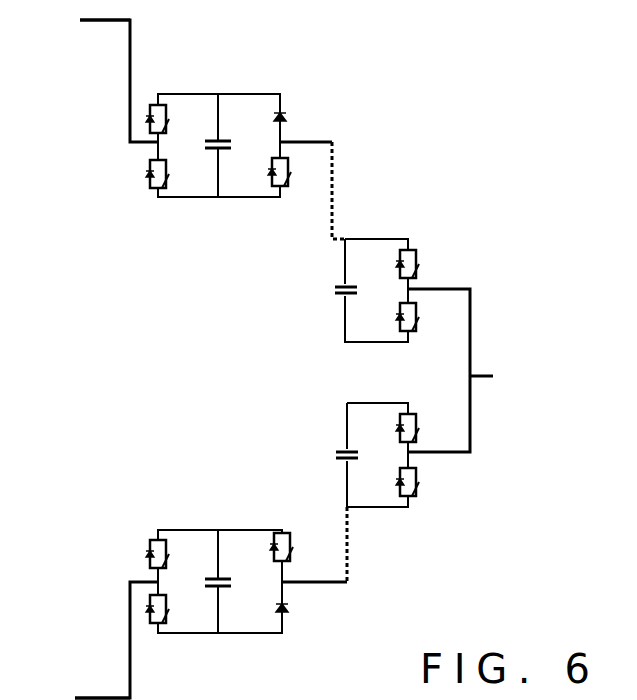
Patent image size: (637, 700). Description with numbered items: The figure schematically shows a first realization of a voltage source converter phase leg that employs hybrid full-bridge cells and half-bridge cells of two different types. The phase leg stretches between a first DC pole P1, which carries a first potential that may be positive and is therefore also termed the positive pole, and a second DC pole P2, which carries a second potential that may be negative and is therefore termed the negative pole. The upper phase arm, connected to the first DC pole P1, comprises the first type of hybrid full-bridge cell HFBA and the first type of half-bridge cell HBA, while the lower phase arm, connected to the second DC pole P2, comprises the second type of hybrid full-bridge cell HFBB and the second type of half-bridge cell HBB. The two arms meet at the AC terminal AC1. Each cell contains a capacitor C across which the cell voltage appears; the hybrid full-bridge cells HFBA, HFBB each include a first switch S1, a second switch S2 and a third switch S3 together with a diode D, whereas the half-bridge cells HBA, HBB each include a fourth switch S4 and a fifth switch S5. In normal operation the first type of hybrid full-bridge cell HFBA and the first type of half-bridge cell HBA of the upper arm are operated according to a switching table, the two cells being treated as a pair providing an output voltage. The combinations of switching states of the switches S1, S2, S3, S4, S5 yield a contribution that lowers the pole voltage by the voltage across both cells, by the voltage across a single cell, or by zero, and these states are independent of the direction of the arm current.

The first DC pole P1 is at (105, 40).
The second DC pole P2 is at (102, 678).
The hybrid full-bridge cell of the first type HFBA is at (219, 119).
The hybrid full-bridge cell of the second type HFBB is at (220, 555).
The half-bridge cell of the first type HBA is at (345, 242).
The half-bridge cell of the second type HBB is at (345, 476).
The AC terminal AC1 is at (483, 370).
The capacitor C is at (281, 361).
The diode D is at (296, 362).
The first switch S1 is at (174, 340).
The second switch S2 is at (174, 392).
The third switch S3 is at (296, 364).
The fourth switch S4 is at (388, 346).
The fifth switch S5 is at (388, 400).